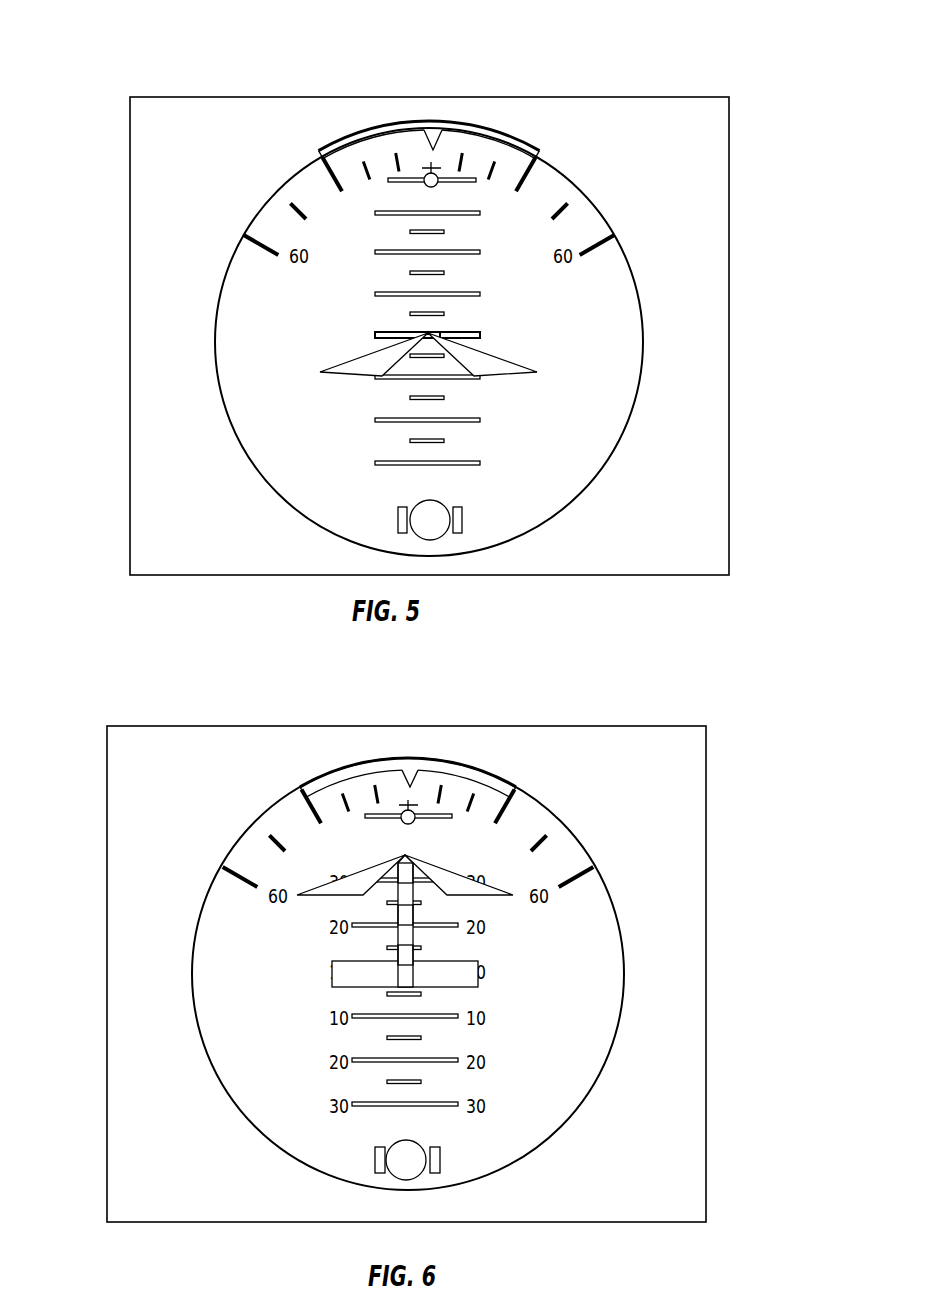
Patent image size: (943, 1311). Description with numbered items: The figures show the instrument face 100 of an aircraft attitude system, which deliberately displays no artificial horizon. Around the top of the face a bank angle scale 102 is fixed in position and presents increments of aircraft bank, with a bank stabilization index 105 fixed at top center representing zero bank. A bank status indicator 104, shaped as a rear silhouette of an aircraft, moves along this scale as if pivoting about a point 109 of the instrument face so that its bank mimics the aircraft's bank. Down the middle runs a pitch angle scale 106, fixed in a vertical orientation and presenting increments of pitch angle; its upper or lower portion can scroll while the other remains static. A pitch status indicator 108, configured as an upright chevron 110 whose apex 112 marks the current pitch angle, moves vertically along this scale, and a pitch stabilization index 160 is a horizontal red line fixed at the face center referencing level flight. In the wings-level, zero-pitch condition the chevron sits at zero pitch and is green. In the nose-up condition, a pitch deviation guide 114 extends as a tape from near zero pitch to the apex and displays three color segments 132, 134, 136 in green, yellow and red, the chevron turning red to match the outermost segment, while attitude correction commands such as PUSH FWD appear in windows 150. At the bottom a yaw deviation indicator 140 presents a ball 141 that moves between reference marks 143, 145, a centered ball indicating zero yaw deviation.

In FIG. 5, the instrument face 100 is at (750, 90).
In FIG. 6, the instrument face 100 is at (730, 752).
In FIG. 5, the bank angle scale 102 is at (492, 58).
In FIG. 6, the bank angle scale 102 is at (476, 748).
In FIG. 5, the bank status indicator 104 is at (428, 178).
In FIG. 6, the bank status indicator 104 is at (404, 814).
In FIG. 5, the bank stabilization index 105 is at (434, 133).
In FIG. 6, the bank stabilization index 105 is at (411, 787).
In FIG. 5, the pitch angle scale 106 is at (335, 424).
In FIG. 5, the pitch status indicator 108 is at (326, 372).
In FIG. 5, the point of the instrument face 109 is at (418, 329).
In FIG. 5, the chevron 110 is at (520, 375).
In FIG. 5, the apex 112 is at (432, 332).
In FIG. 5, the pitch stabilization index 160 is at (492, 334).
In FIG. 6, the pitch deviation guide 114 is at (428, 917).
In FIG. 6, the first color segment 132 is at (405, 957).
In FIG. 6, the second color segment 134 is at (405, 920).
In FIG. 6, the third color segment 136 is at (403, 875).
In FIG. 6, the yaw deviation indicator 140 is at (500, 1183).
In FIG. 6, the ball 141 is at (384, 1148).
In FIG. 6, the reference mark 143 is at (370, 1160).
In FIG. 6, the reference mark 145 is at (440, 1158).
In FIG. 6, the windows 150 is at (480, 988).